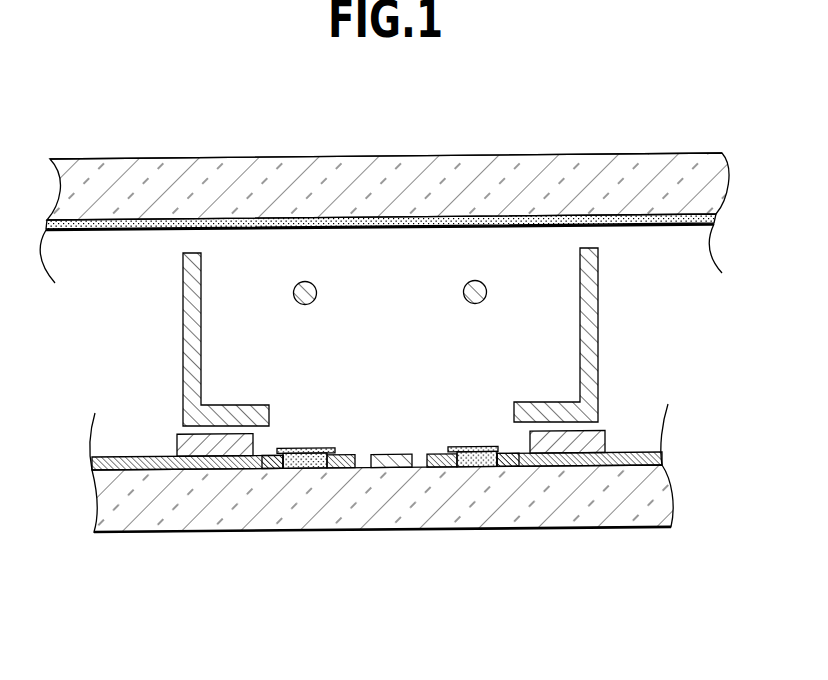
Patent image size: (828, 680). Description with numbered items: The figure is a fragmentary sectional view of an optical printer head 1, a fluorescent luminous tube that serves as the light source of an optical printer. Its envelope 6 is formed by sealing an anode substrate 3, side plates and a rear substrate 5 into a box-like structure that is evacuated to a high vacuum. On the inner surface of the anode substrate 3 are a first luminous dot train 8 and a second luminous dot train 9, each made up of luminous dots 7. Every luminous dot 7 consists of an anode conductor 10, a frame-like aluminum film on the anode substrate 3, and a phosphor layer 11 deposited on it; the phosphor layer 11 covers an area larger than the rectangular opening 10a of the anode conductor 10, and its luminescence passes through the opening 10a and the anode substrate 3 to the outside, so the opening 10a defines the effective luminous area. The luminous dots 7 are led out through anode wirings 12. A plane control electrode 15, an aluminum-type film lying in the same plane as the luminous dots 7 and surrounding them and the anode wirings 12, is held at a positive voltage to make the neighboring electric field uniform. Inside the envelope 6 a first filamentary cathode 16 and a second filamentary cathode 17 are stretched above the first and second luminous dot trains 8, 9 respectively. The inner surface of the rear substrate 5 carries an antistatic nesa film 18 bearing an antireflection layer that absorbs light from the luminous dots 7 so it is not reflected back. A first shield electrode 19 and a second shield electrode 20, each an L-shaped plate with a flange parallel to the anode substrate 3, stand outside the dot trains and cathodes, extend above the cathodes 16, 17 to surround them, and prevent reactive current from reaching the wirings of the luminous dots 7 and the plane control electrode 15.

The optical printer head 1 is at (384, 181).
The anode substrate 3 is at (412, 515).
The rear substrate 5 is at (636, 170).
The envelope 6 is at (176, 150).
The luminous dot 7 is at (389, 523).
The first luminous dot train 8 is at (310, 470).
The second luminous dot train 9 is at (455, 468).
The anode conductor 10 is at (218, 472).
The opening of the anode conductor 10a is at (282, 472).
The phosphor layer 11 is at (307, 447).
The anode wiring 12 is at (187, 472).
The plane control electrode 15 is at (391, 454).
The first filamentary cathode 16 is at (318, 293).
The second filamentary cathode 17 is at (488, 291).
The antistatic nesa film 18 is at (662, 229).
The first shield electrode 19 is at (183, 301).
The second shield electrode 20 is at (592, 293).